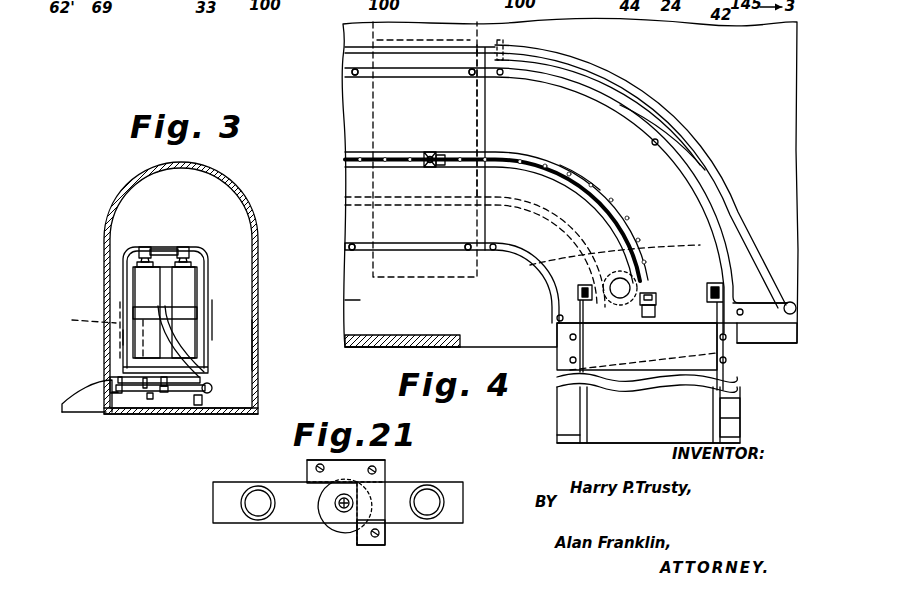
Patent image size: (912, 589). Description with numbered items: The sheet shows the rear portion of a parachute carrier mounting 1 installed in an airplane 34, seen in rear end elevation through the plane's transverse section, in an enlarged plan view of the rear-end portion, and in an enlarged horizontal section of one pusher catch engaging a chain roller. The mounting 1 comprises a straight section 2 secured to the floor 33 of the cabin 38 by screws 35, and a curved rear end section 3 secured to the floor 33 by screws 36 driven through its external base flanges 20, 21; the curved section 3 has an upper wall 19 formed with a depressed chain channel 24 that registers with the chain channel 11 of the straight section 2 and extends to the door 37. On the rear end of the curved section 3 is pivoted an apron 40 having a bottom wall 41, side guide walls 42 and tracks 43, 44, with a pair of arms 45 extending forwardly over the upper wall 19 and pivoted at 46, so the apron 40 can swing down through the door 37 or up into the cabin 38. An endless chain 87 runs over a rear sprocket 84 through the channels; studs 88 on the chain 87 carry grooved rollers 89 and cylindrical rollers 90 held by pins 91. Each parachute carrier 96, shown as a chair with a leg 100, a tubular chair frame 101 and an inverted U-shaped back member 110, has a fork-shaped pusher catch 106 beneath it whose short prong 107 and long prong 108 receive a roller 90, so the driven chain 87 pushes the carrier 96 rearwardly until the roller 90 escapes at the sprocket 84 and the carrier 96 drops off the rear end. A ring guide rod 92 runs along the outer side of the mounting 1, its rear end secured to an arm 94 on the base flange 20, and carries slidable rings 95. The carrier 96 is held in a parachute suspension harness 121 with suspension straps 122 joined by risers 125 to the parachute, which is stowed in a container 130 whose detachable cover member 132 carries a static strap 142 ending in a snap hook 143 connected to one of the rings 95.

In FIG. 3, the parachute carrier mounting 1 is at (206, 401).
In FIG. 4, the parachute carrier mounting 1 is at (418, 151).
In FIG. 4, the straight section 2 is at (360, 94).
In FIG. 3, the curved rear end section 3 is at (149, 398).
In FIG. 4, the curved rear end section 3 is at (618, 136).
In FIG. 4, the chain channel 11 is at (395, 150).
In FIG. 4, the upper wall 19 is at (661, 204).
In FIG. 4, the external base flange 20 is at (694, 153).
In FIG. 4, the external base flange 21 is at (530, 266).
In FIG. 4, the chain channel 24 is at (596, 197).
In FIG. 3, the floor 33 is at (228, 415).
In FIG. 4, the floor 33 is at (370, 304).
In FIG. 3, the airplane 34 is at (261, 251).
In FIG. 4, the airplane 34 is at (343, 238).
In FIG. 4, the screws 35 is at (352, 70).
In FIG. 4, the screws 36 is at (503, 71).
In FIG. 3, the door 37 is at (122, 255).
In FIG. 4, the door 37 is at (531, 372).
In FIG. 3, the cabin 38 is at (256, 336).
In FIG. 4, the cabin 38 is at (396, 341).
In FIG. 3, the apron 40 is at (80, 390).
In FIG. 4, the apron 40 is at (607, 447).
In FIG. 4, the bottom wall 41 is at (668, 424).
In FIG. 3, the side guide walls 42 is at (92, 403).
In FIG. 4, the side guide walls 42 is at (582, 418).
In FIG. 3, the track 43 is at (72, 411).
In FIG. 4, the track 43 is at (726, 428).
In FIG. 4, the track 44 is at (567, 436).
In FIG. 3, the arms 45 is at (115, 378).
In FIG. 4, the arms 45 is at (560, 329).
In FIG. 3, the pivot 46 is at (143, 384).
In FIG. 4, the pivot 46 is at (530, 276).
In FIG. 4, the sprocket 84 is at (632, 236).
In FIG. 4, the endless chain 87 is at (540, 157).
In FIG. 21, the endless chain 87 is at (226, 505).
In FIG. 21, the studs 88 is at (387, 510).
In FIG. 21, the grooved rollers 89 is at (312, 498).
In FIG. 4, the cylindrical rollers 90 is at (429, 166).
In FIG. 21, the cylindrical rollers 90 is at (327, 521).
In FIG. 21, the pins 91 is at (331, 460).
In FIG. 3, the ring guide rod 92 is at (148, 382).
In FIG. 4, the ring guide rod 92 is at (612, 74).
In FIG. 4, the arm 94 is at (757, 313).
In FIG. 3, the rings 95 is at (211, 385).
In FIG. 4, the rings 95 is at (790, 300).
In FIG. 3, the parachute carriers 96 is at (222, 320).
In FIG. 4, the parachute carriers 96 is at (382, 110).
In FIG. 4, the leg 100 is at (396, 125).
In FIG. 3, the chair frame 101 is at (209, 334).
In FIG. 3, the carrier pusher catch 106 is at (164, 390).
In FIG. 4, the carrier pusher catch 106 is at (430, 152).
In FIG. 21, the carrier pusher catch 106 is at (367, 492).
In FIG. 4, the short prong 107 is at (426, 164).
In FIG. 21, the short prong 107 is at (320, 508).
In FIG. 4, the long prong 108 is at (440, 168).
In FIG. 21, the long prong 108 is at (362, 543).
In FIG. 3, the back member 110 is at (206, 290).
In FIG. 3, the parachute suspension harness 121 is at (150, 244).
In FIG. 3, the suspension straps 122 is at (144, 244).
In FIG. 3, the risers 125 is at (190, 261).
In FIG. 3, the parachute container 130 is at (128, 291).
In FIG. 3, the detachable cover member 132 is at (180, 287).
In FIG. 3, the static strap 142 is at (183, 351).
In FIG. 3, the snap hook 143 is at (208, 379).